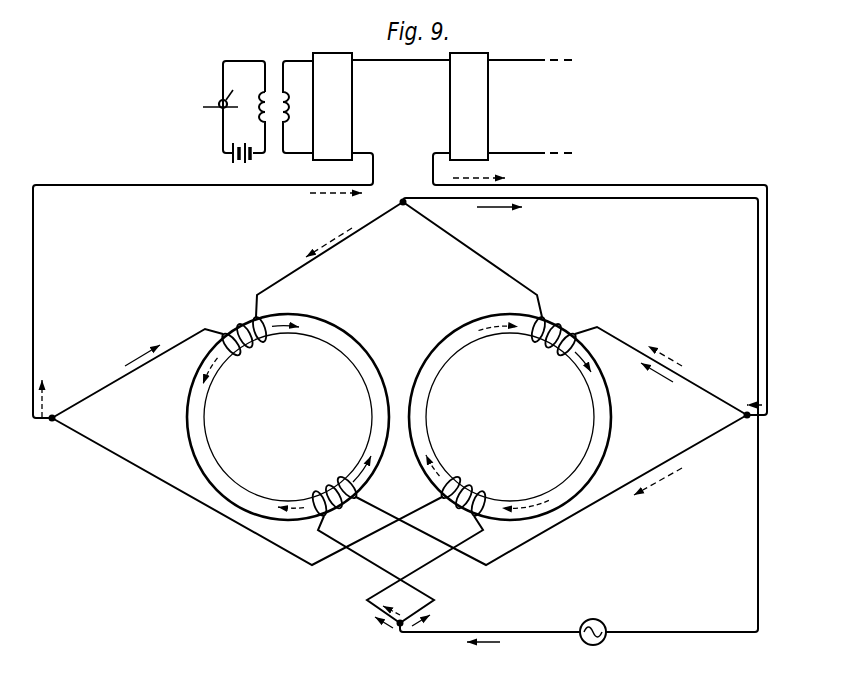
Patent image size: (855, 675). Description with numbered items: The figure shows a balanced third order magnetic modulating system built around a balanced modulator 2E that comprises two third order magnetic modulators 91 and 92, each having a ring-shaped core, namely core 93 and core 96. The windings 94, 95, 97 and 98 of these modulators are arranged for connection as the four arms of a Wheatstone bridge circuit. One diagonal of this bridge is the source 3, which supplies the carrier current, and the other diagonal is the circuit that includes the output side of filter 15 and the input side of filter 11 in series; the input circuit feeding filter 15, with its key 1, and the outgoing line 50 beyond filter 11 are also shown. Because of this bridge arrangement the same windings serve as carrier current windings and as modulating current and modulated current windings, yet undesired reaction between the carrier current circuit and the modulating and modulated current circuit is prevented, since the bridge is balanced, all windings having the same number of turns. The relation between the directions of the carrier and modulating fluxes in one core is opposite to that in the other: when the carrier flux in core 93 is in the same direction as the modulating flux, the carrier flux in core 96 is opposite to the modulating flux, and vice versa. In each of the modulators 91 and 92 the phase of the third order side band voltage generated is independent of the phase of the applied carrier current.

The telegraph key 1 is at (226, 90).
The filter 15 is at (352, 103).
The filter 11 is at (488, 103).
The output line 50 is at (557, 63).
The balanced modulator 2E is at (395, 416).
The third order magnetic modulator 91 is at (572, 416).
The third order magnetic modulator 92 is at (218, 416).
The core 93 is at (595, 448).
The core 96 is at (199, 449).
The winding 94 is at (556, 346).
The winding 95 is at (468, 488).
The winding 97 is at (248, 350).
The winding 98 is at (332, 483).
The source 3 is at (601, 621).